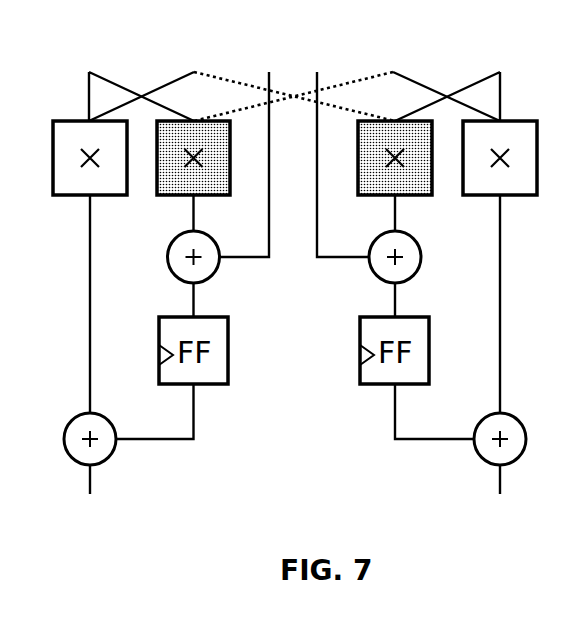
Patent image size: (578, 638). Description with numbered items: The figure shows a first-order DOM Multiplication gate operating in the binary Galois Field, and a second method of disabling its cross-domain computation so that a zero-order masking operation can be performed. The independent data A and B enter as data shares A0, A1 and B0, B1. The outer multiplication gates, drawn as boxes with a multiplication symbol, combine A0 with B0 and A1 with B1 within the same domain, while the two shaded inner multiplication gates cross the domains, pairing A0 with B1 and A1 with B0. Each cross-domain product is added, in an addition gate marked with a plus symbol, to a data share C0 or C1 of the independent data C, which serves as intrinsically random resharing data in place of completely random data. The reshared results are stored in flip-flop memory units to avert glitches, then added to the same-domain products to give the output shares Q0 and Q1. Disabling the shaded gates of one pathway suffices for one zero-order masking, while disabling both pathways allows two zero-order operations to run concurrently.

The data share A0 is at (134, 78).
The data share B0 is at (242, 78).
The data share C0 is at (250, 146).
The data share C1 is at (335, 146).
The data share B1 is at (347, 78).
The data share A1 is at (455, 78).
The output data share Q0 is at (91, 504).
The output data share Q1 is at (501, 504).